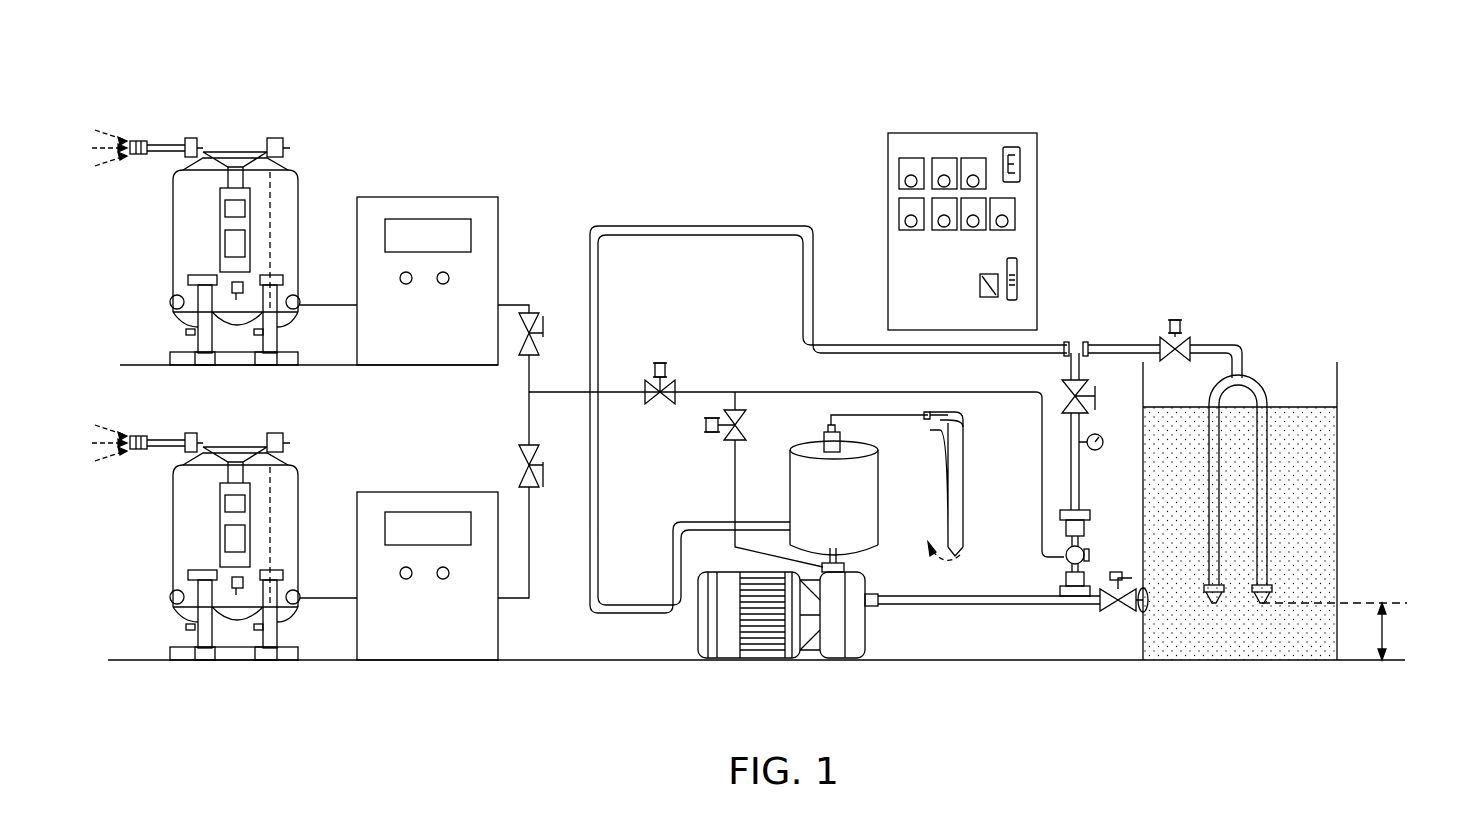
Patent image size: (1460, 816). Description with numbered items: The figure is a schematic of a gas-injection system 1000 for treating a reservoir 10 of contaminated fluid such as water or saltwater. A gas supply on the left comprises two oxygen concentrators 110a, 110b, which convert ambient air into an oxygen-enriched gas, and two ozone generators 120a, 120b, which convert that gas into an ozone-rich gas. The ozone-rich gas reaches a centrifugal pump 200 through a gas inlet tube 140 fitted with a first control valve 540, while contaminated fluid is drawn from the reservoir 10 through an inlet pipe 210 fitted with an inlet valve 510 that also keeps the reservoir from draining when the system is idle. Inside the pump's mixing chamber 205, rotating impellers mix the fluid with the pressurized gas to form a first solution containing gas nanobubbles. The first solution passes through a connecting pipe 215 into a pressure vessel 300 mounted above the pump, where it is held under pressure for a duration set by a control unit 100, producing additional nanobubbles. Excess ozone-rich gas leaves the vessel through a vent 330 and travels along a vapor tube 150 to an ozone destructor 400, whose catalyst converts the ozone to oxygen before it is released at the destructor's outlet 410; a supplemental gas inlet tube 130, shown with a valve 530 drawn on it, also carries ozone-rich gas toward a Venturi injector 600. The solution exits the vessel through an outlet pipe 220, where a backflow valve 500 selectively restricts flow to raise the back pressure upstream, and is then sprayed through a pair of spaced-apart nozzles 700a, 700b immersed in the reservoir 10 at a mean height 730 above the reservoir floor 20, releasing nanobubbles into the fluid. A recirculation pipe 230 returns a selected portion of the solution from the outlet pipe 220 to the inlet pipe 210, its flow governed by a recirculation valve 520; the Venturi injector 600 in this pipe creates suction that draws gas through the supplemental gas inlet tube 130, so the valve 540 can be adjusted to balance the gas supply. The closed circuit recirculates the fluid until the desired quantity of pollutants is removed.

The reservoir 10 is at (1312, 350).
The reservoir floor 20 is at (1240, 533).
The control unit 100 is at (970, 133).
The oxygen concentrator 110a is at (300, 120).
The oxygen concentrator 110b is at (268, 428).
The ozone generator 120a is at (440, 197).
The ozone generator 120b is at (410, 490).
The supplemental gas inlet tube 130 is at (785, 392).
The gas inlet tube 140 is at (735, 475).
The vapor tube 150 is at (895, 418).
The centrifugal pump 200 is at (722, 650).
The mixing chamber 205 is at (762, 650).
The inlet pipe 210 is at (963, 604).
The connecting pipe 215 is at (840, 560).
The outlet pipe 220 is at (673, 590).
The recirculation pipe 230 is at (1071, 470).
The pressure vessel 300 is at (853, 512).
The vent 330 is at (822, 440).
The ozone destructor 400 is at (965, 458).
The pipe outlet 410 is at (963, 548).
The backflow valve 500 is at (1176, 318).
The inlet valve 510 is at (1127, 612).
The recirculation valve 520 is at (1092, 400).
The valve 530 is at (660, 372).
The first control valve 540 is at (703, 425).
The Venturi injector 600 is at (1080, 552).
The nozzle 700a is at (1215, 603).
The nozzle 700b is at (1262, 603).
The mean height 730 is at (1385, 632).
The gas-injection system 1000 is at (1163, 133).